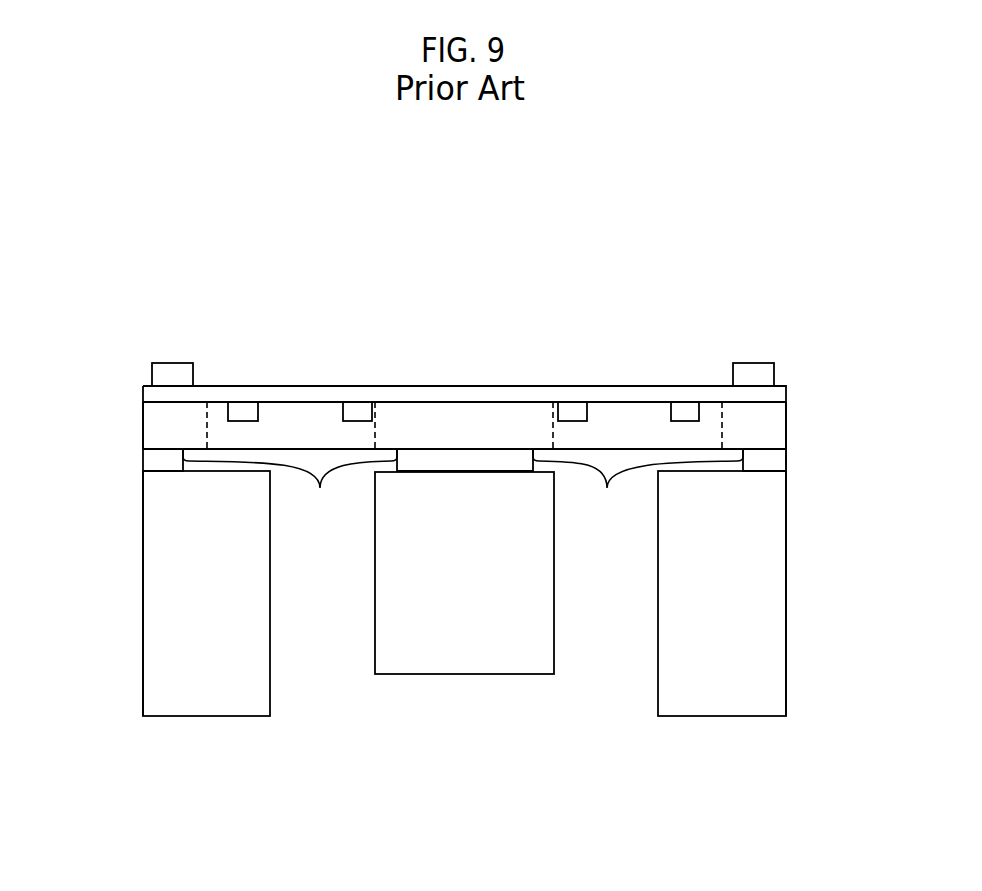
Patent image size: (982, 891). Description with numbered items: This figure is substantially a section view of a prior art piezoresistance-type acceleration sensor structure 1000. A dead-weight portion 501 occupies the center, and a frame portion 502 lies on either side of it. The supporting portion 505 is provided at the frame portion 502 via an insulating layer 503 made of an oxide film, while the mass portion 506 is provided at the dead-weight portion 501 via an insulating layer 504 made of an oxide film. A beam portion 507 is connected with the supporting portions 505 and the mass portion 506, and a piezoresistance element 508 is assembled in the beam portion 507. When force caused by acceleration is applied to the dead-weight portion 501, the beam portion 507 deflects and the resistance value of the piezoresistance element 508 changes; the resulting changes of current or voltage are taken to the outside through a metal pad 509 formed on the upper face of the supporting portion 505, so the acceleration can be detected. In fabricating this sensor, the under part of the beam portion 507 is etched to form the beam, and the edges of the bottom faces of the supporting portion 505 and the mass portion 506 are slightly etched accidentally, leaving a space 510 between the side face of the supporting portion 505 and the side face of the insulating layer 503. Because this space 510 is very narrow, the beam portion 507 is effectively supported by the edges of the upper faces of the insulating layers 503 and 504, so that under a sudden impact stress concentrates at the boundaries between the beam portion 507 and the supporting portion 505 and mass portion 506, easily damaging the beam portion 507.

The sensor structure 1000 is at (637, 237).
The dead-weight portion 501 is at (468, 667).
The frame portion 502 is at (150, 592).
The insulating layer 503 is at (150, 460).
The insulating layer 504 is at (489, 463).
The supporting portion 505 is at (150, 425).
The mass portion 506 is at (421, 410).
The beam portion 507 is at (300, 410).
The piezoresistance element 508 is at (245, 413).
The metal pad 509 is at (172, 363).
The space 510 is at (463, 482).